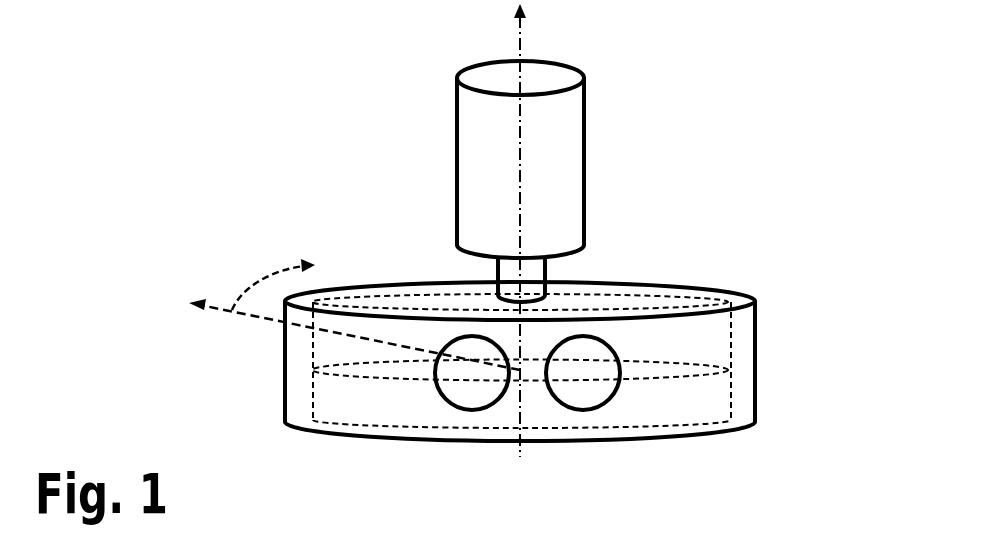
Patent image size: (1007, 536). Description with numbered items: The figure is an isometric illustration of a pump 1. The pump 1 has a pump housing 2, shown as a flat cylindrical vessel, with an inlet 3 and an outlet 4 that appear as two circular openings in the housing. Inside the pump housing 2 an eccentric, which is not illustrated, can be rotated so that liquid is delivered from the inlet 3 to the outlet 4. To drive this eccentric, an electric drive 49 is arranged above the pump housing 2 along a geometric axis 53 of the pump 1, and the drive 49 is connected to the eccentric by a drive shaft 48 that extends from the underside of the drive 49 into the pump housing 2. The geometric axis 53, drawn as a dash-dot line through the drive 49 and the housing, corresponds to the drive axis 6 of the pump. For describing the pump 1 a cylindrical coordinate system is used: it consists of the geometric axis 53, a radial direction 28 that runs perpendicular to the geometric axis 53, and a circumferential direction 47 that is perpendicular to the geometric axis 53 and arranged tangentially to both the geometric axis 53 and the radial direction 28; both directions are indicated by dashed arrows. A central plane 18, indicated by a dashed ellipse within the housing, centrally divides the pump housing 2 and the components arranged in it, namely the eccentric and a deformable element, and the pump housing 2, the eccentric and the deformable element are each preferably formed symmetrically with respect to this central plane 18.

The pump 1 is at (347, 164).
The pump housing 2 is at (285, 372).
The inlet 3 is at (445, 403).
The outlet 4 is at (607, 403).
The drive axis 6 is at (521, 152).
The central plane 18 is at (690, 377).
The radial direction 28 is at (213, 306).
The circumferential direction 47 is at (274, 272).
The drive shaft 48 is at (548, 268).
The drive 49 is at (585, 203).
The geometric axis 53 is at (521, 46).